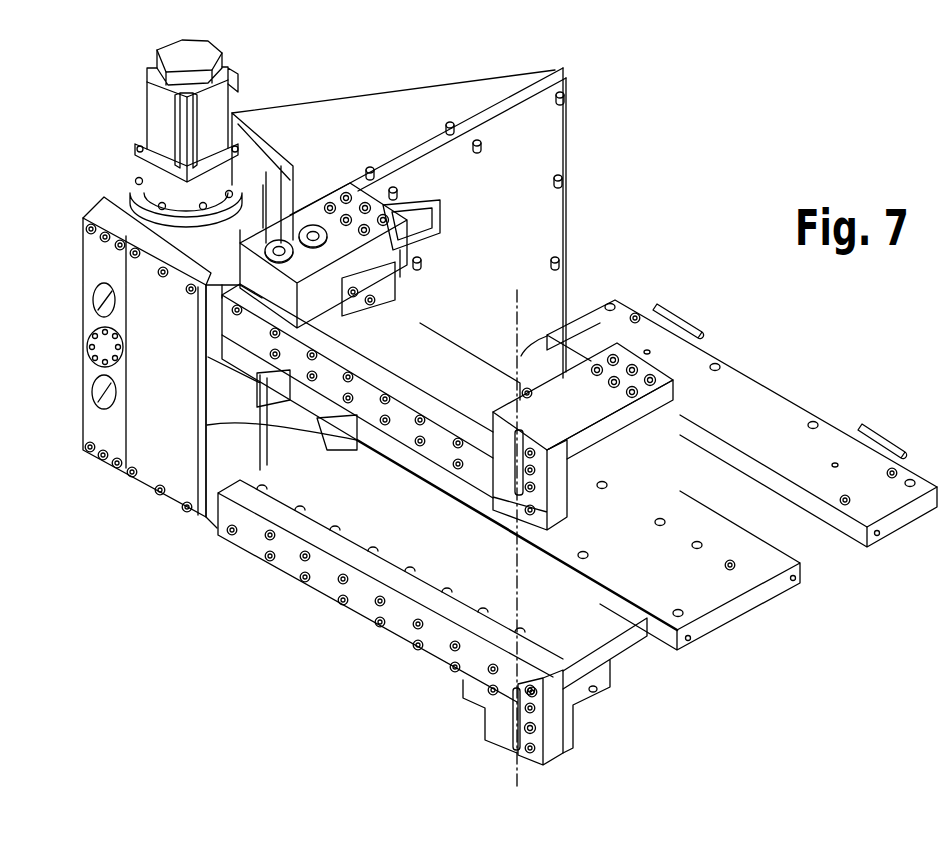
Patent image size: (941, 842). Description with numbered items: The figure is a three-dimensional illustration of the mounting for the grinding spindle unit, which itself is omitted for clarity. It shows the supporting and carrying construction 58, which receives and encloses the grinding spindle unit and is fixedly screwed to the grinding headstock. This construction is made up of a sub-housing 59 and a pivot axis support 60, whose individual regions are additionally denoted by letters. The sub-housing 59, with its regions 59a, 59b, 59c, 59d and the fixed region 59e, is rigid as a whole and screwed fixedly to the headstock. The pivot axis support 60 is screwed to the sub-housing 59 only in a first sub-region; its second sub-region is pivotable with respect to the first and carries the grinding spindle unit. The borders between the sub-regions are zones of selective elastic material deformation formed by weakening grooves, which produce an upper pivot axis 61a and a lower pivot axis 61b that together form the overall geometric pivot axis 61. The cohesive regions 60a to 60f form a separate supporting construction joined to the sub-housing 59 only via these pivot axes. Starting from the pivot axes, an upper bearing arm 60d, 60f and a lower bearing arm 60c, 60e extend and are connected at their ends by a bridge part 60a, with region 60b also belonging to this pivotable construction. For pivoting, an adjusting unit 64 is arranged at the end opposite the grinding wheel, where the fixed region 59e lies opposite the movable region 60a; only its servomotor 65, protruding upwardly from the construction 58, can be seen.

The supporting and carrying construction 58 is at (692, 144).
The sub-housing 59 is at (536, 140).
The individual region of the sub-housing 59a is at (463, 100).
The individual region of the sub-housing 59b is at (548, 213).
The individual region of the sub-housing 59c is at (618, 443).
The individual region of the sub-housing 59d is at (718, 592).
The fixed region of the sub-housing 59e is at (248, 175).
The pivot axis support 60 is at (444, 680).
The bridge part 60a is at (90, 452).
The individual region of the pivot axis support 60b is at (153, 473).
The lower bearing arm 60c is at (365, 610).
The upper bearing arm 60d is at (408, 432).
The lower bearing arm 60e is at (615, 623).
The upper bearing arm 60f is at (421, 353).
The overall geometric pivot axis 61 is at (515, 602).
The upper pivot axis 61a is at (614, 298).
The lower pivot axis 61b is at (513, 765).
The adjusting unit 64 is at (136, 127).
The servomotor 65 is at (152, 100).